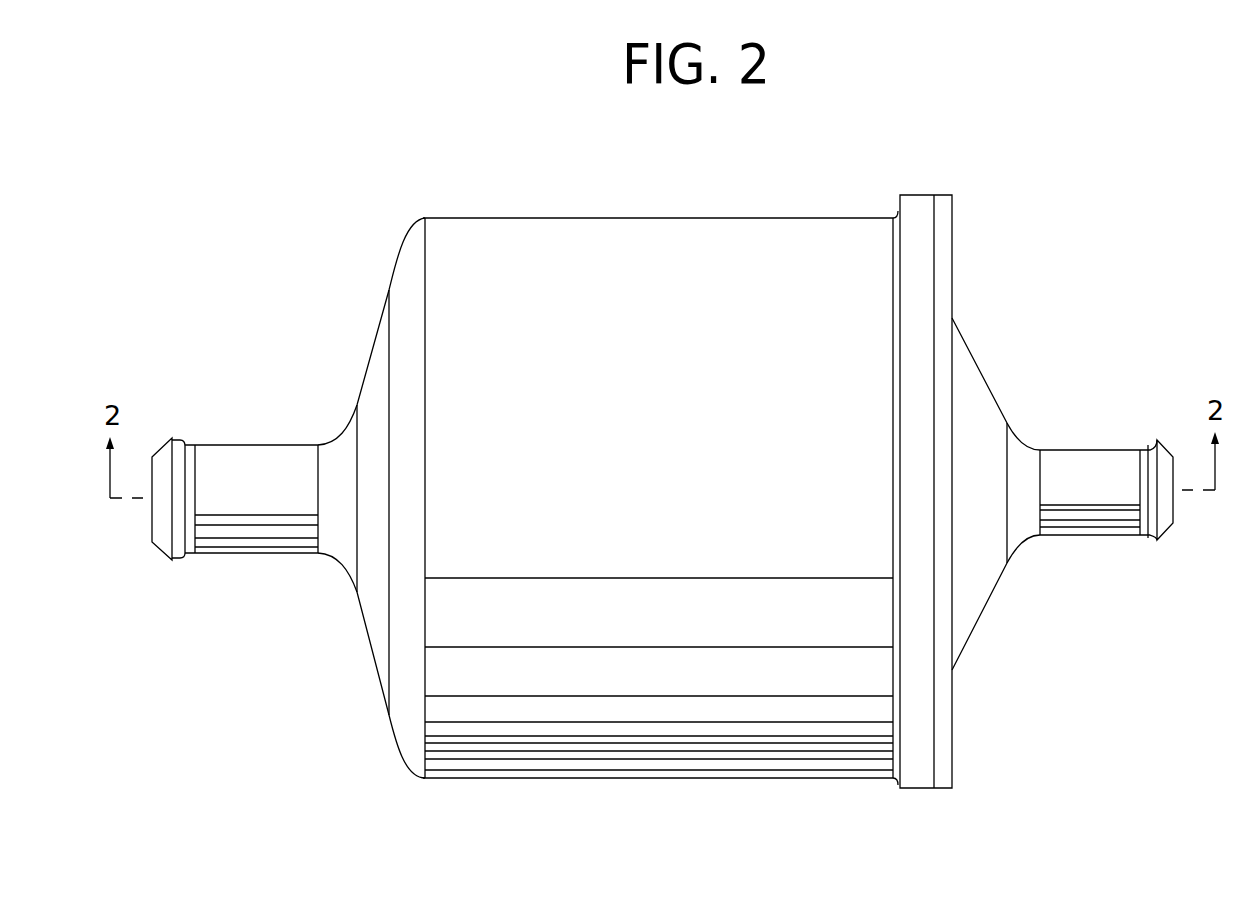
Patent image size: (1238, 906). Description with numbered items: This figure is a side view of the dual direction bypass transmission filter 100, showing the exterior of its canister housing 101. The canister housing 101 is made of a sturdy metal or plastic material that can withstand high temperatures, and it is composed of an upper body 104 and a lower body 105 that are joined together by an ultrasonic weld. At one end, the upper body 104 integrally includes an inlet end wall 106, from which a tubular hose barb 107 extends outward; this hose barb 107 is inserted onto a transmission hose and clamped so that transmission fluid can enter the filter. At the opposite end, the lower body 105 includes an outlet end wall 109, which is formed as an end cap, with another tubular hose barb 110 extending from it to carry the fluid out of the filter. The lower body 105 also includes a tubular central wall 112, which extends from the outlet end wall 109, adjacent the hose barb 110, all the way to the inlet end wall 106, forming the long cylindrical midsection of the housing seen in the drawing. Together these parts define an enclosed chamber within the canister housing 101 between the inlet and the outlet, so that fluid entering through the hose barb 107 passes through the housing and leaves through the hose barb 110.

The transmission filter 100 is at (566, 816).
The canister housing 101 is at (528, 207).
The upper body 104 is at (970, 383).
The lower body 105 is at (480, 760).
The inlet end wall 106 is at (983, 582).
The tubular hose barb 107 is at (1100, 523).
The outlet end wall 109 is at (373, 657).
The tubular hose barb 110 is at (242, 455).
The tubular central wall 112 is at (655, 242).